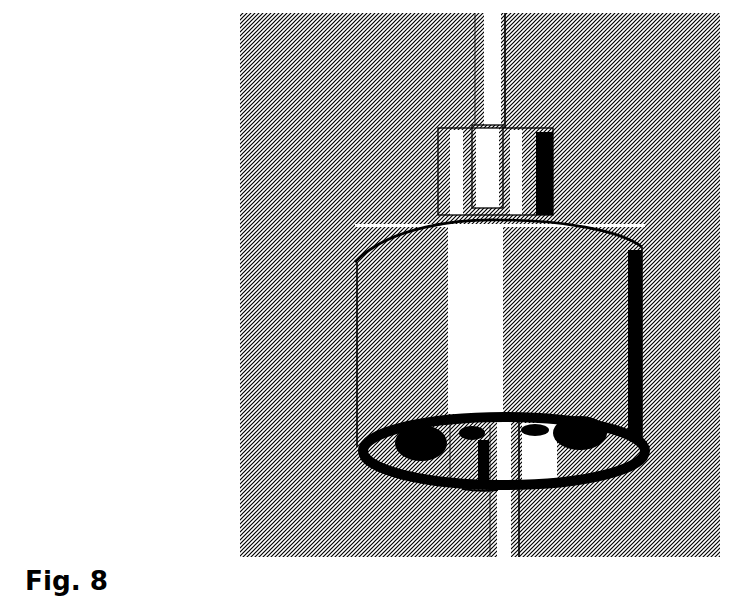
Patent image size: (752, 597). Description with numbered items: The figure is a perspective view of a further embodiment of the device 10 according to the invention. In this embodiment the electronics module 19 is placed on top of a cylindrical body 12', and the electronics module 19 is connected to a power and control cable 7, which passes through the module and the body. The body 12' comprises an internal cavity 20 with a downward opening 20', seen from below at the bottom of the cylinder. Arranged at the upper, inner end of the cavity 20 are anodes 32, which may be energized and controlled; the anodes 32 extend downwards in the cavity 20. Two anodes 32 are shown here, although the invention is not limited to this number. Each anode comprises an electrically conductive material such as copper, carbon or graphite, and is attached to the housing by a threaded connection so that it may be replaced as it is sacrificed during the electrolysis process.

The power and control cable 7 is at (587, 285).
The device 10 is at (320, 144).
The cylindrical body 12' is at (456, 352).
The electronics module 19 is at (563, 153).
The internal cavity 20 is at (422, 482).
The downward opening 20' is at (440, 519).
The anodes 32 is at (497, 471).